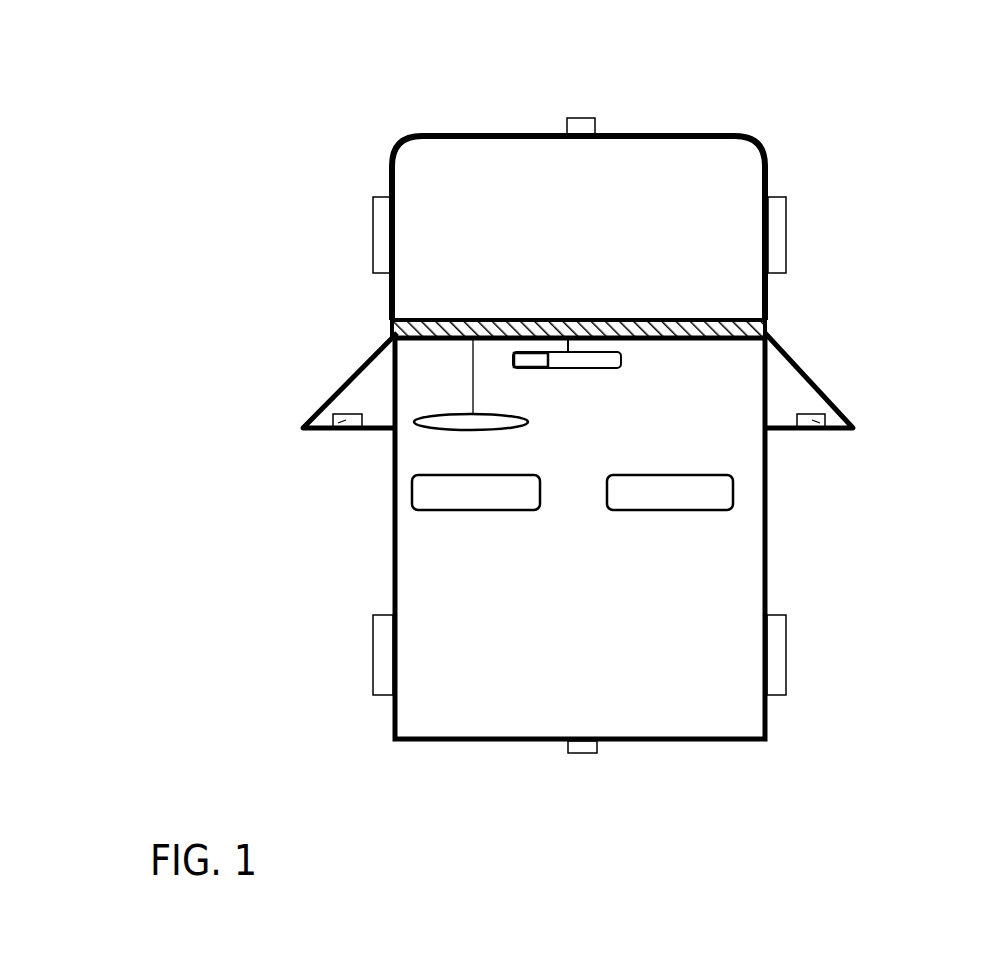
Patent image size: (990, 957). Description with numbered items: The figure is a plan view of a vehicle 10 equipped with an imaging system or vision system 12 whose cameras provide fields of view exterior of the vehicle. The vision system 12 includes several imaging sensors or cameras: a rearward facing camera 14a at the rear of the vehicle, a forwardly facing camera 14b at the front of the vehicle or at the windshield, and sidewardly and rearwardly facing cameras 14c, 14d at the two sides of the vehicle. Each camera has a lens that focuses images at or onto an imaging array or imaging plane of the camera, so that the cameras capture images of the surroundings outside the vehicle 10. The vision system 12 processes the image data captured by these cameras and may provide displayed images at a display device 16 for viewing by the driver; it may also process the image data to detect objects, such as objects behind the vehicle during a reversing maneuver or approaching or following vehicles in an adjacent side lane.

The vehicle 10 is at (312, 148).
The vision system 12 is at (528, 772).
The rearward facing camera 14a is at (585, 753).
The forwardly facing camera 14b is at (580, 120).
The sidewardly/rearwardly facing camera 14c is at (303, 428).
The sidewardly/rearwardly facing camera 14d is at (853, 428).
The display device 16 is at (542, 363).